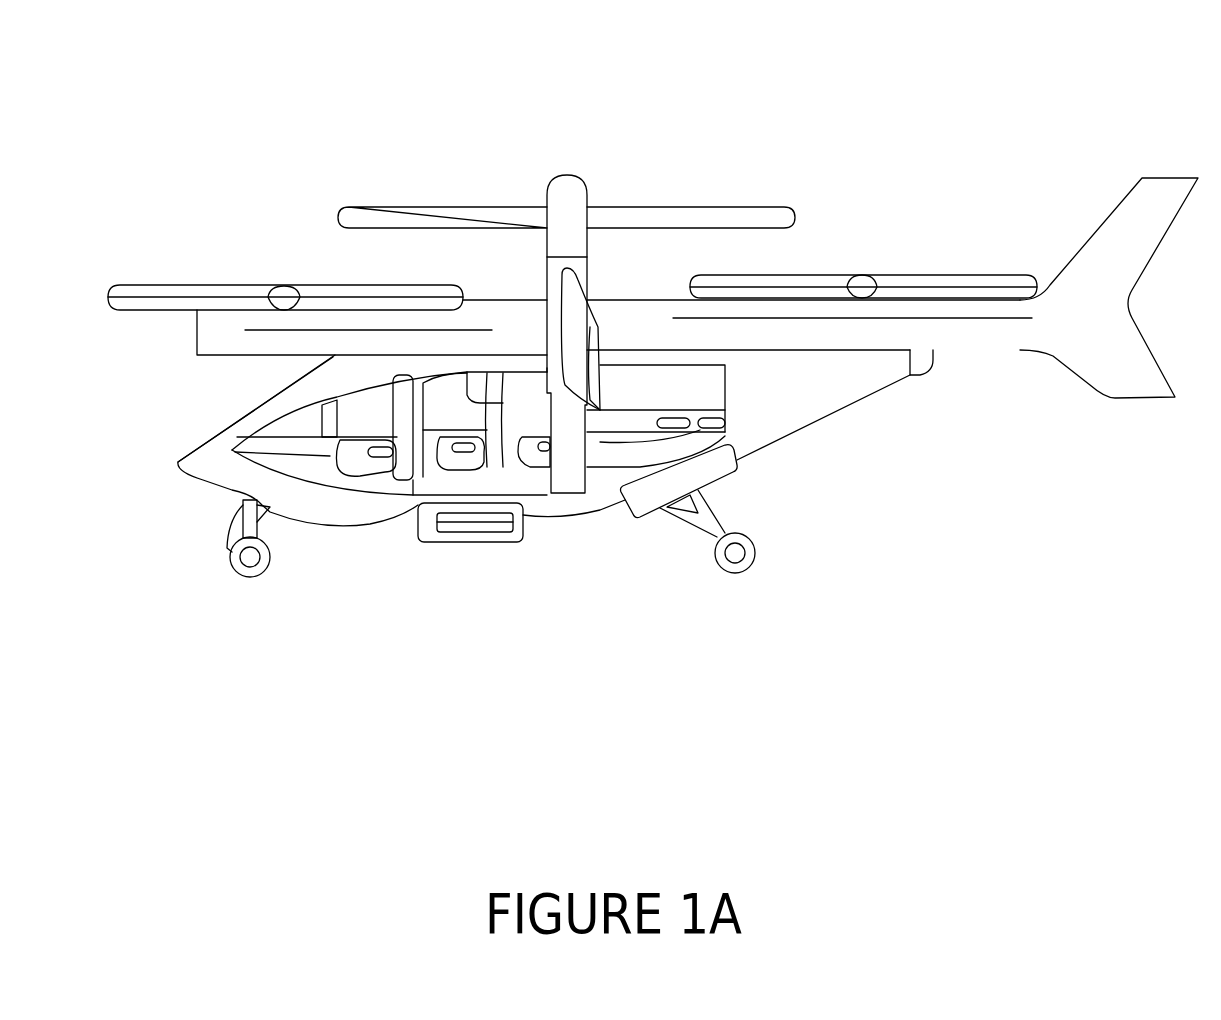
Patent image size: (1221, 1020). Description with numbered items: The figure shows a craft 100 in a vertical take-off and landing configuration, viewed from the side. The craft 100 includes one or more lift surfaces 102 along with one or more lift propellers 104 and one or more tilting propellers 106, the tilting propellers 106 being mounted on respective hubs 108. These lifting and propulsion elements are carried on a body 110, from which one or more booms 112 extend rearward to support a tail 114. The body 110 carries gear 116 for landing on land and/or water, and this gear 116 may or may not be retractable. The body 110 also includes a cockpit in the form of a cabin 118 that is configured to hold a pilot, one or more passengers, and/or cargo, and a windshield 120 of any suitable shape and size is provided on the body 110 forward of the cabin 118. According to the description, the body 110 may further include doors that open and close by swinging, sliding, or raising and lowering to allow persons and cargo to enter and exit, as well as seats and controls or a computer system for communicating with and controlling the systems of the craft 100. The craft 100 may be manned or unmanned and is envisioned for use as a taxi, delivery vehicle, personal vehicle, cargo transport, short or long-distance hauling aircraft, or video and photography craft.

The craft 100 is at (180, 61).
The lift surface 102 is at (580, 302).
The lift propeller 104 is at (230, 287).
The tilting propeller 106 is at (430, 212).
The hub 108 is at (563, 478).
The body 110 is at (823, 418).
The boom 112 is at (968, 340).
The tail 114 is at (1128, 192).
The gear 116 is at (267, 572).
The cabin 118 is at (377, 473).
The windshield 120 is at (237, 420).